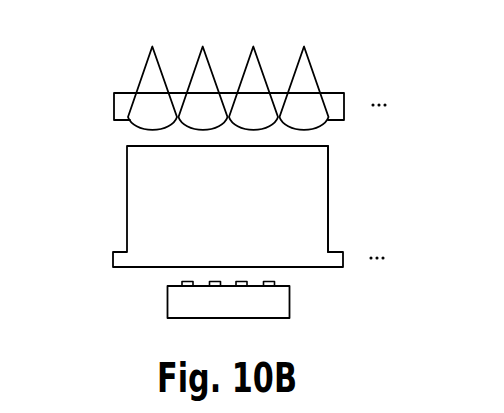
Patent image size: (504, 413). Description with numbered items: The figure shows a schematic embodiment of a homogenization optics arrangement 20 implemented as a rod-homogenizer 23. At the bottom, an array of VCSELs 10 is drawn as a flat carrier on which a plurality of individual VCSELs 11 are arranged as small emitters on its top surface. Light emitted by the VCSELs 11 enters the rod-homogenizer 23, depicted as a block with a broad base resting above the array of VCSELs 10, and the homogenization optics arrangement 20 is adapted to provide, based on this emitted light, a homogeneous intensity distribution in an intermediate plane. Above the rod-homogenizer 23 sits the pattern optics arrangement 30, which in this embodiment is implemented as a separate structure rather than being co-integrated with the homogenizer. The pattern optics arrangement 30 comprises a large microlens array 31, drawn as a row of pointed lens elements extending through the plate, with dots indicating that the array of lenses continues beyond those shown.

The array of VCSELs 10 is at (167, 298).
The VCSELs 11 is at (273, 282).
The homogenization optics arrangement 20 is at (127, 189).
The rod-homogenizer 23 is at (316, 190).
The pattern optics arrangement 30 is at (113, 103).
The microlens array 31 is at (250, 127).